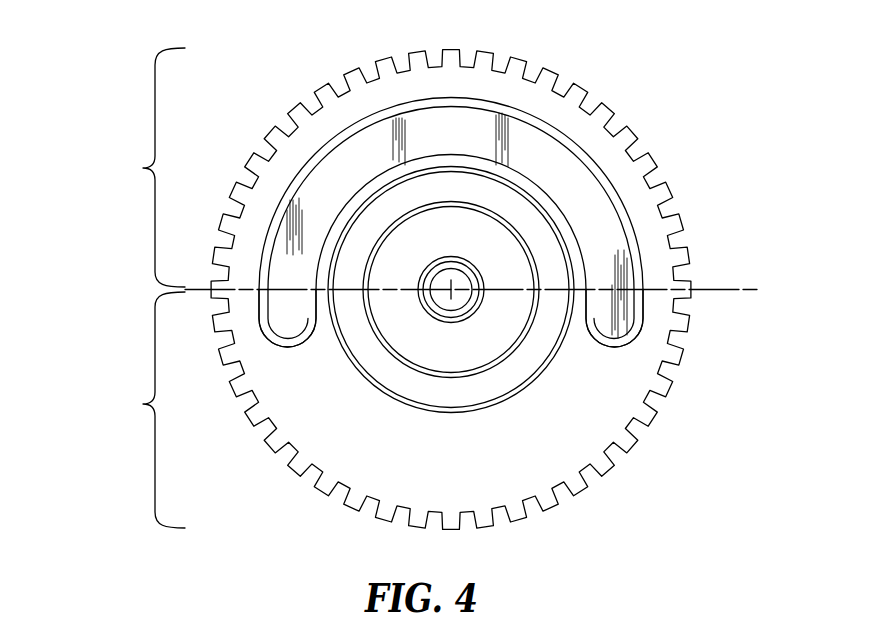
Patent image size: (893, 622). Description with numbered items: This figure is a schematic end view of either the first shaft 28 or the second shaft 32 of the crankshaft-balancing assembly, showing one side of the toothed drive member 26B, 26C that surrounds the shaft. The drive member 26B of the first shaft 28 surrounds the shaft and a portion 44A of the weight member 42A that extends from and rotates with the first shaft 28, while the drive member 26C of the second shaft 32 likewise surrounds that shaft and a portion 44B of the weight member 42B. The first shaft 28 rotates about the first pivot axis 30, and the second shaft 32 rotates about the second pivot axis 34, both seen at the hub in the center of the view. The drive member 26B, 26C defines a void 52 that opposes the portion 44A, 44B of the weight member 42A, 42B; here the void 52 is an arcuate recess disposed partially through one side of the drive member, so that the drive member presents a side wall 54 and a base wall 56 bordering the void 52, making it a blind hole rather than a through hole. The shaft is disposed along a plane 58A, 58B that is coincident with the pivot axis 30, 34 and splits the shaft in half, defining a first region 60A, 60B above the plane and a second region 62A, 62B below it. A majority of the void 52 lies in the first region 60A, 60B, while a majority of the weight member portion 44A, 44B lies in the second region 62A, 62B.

The drive member 26B is at (504, 290).
The drive member 26C is at (670, 385).
The first shaft 28 is at (363, 323).
The second shaft 32 is at (369, 330).
The first pivot axis 30 is at (397, 347).
The second pivot axis 34 is at (451, 290).
The weight member 42A is at (513, 349).
The weight member 42B is at (540, 433).
The portion of the weight member 44A is at (405, 357).
The portion of the weight member 44B is at (412, 445).
The void 52 is at (493, 117).
The side wall 54 is at (393, 177).
The base wall 56 is at (580, 173).
The plane 58A is at (490, 245).
The plane 58B is at (728, 289).
The first region 60A is at (99, 167).
The first region 60B is at (143, 168).
The second region 62A is at (99, 410).
The second region 62B is at (143, 404).